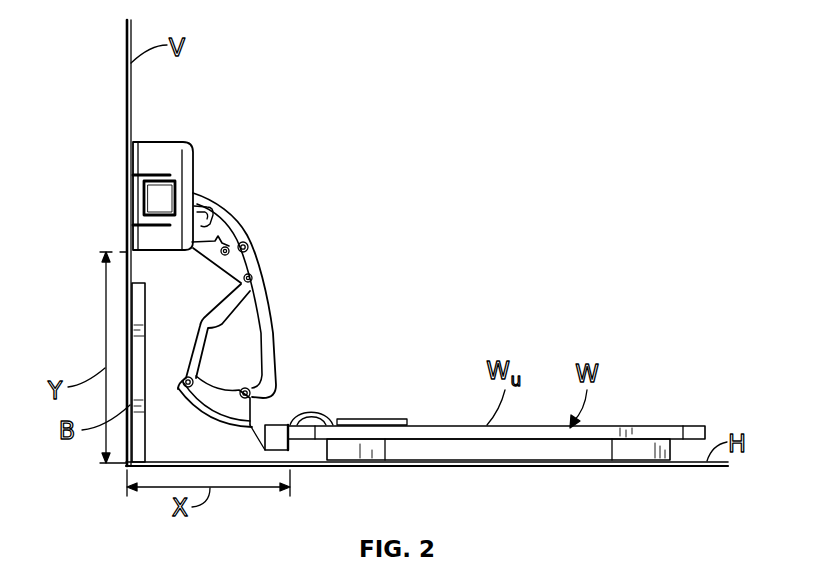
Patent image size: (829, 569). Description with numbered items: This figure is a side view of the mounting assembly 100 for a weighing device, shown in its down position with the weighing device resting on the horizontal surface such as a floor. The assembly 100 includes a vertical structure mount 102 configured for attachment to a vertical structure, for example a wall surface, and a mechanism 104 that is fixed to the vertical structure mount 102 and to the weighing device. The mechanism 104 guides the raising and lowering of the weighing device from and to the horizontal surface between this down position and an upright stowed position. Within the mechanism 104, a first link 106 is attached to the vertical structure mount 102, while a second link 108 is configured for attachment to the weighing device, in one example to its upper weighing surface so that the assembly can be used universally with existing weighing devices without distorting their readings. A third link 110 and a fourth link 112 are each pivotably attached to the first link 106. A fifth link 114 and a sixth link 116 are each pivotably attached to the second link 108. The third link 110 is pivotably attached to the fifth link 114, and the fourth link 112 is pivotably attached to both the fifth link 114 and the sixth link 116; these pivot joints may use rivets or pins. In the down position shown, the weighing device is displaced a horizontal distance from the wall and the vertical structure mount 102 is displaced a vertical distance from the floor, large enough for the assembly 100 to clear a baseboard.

The mounting assembly 100 is at (381, 243).
The vertical structure mount 102 is at (161, 152).
The mechanism 104 is at (196, 309).
The first link 106 is at (183, 183).
The second link 108 is at (258, 412).
The third link 110 is at (234, 218).
The fourth link 112 is at (210, 248).
The fifth link 114 is at (195, 353).
The sixth link 116 is at (194, 350).